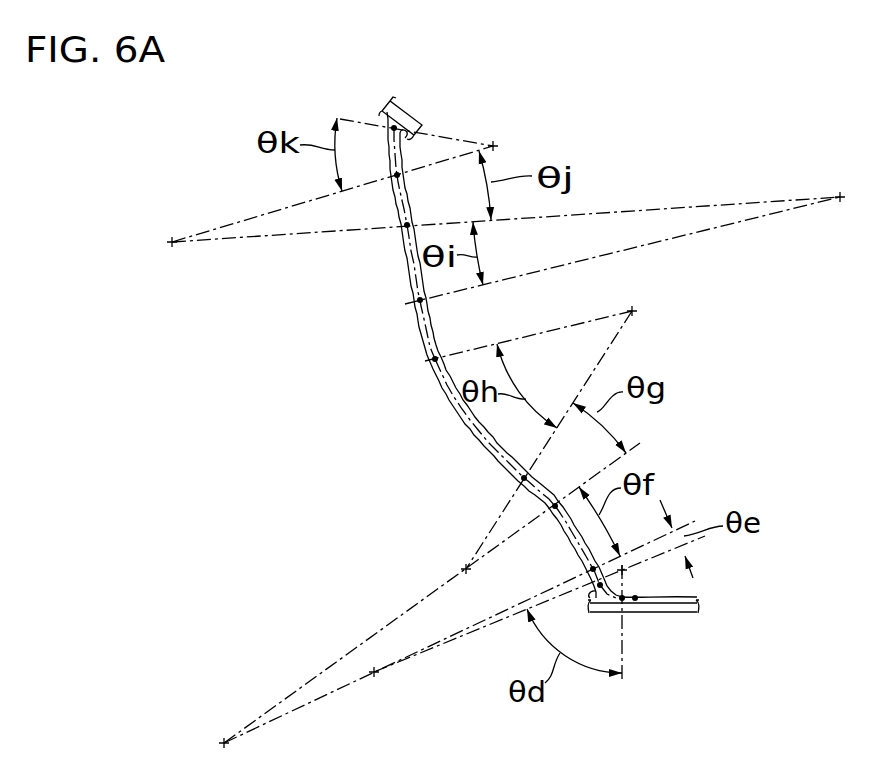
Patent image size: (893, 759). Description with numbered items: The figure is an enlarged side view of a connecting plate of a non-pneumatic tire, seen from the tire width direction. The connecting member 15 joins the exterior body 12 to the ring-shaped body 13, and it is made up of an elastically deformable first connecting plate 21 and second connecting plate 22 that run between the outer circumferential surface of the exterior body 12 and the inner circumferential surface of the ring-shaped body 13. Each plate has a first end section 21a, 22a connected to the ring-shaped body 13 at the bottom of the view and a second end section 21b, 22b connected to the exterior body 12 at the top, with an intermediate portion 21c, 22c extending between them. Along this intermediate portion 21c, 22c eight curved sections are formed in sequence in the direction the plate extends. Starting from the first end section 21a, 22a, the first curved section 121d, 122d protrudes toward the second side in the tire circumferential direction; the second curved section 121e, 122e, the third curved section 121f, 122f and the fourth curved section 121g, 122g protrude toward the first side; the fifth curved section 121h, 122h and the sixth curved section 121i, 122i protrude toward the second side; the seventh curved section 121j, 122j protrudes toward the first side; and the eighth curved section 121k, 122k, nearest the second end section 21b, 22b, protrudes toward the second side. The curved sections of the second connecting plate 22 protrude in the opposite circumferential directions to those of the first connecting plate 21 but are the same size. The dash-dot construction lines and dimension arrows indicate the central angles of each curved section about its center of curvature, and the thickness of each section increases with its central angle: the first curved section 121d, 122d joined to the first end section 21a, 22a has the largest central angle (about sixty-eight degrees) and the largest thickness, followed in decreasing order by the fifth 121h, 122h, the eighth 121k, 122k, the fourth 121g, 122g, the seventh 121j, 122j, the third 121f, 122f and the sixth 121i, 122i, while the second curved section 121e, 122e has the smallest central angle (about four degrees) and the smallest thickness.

The exterior body 12 is at (408, 109).
The ring-shaped body 13 is at (672, 613).
The connecting member 15 is at (674, 315).
The first connecting plate 21 is at (536, 325).
The second connecting plate 22 is at (536, 325).
The first end section 21a is at (723, 593).
The first end section 22a is at (638, 598).
The second end section 21b is at (325, 90).
The second end section 22b is at (383, 112).
The intermediate portion 21c is at (351, 363).
The intermediate portion 22c is at (423, 396).
The first curved section 121d is at (726, 572).
The first curved section 122d is at (625, 596).
The second curved section 121e is at (699, 526).
The second curved section 122e is at (606, 567).
The third curved section 121f is at (466, 536).
The third curved section 122f is at (573, 530).
The fourth curved section 121g is at (658, 468).
The fourth curved section 122g is at (546, 488).
The fifth curved section 121h is at (412, 418).
The fifth curved section 122h is at (468, 437).
The sixth curved section 121i is at (329, 262).
The sixth curved section 122i is at (406, 262).
The seventh curved section 121j is at (501, 164).
The seventh curved section 122j is at (406, 190).
The eighth curved section 121k is at (306, 123).
The eighth curved section 122k is at (389, 160).